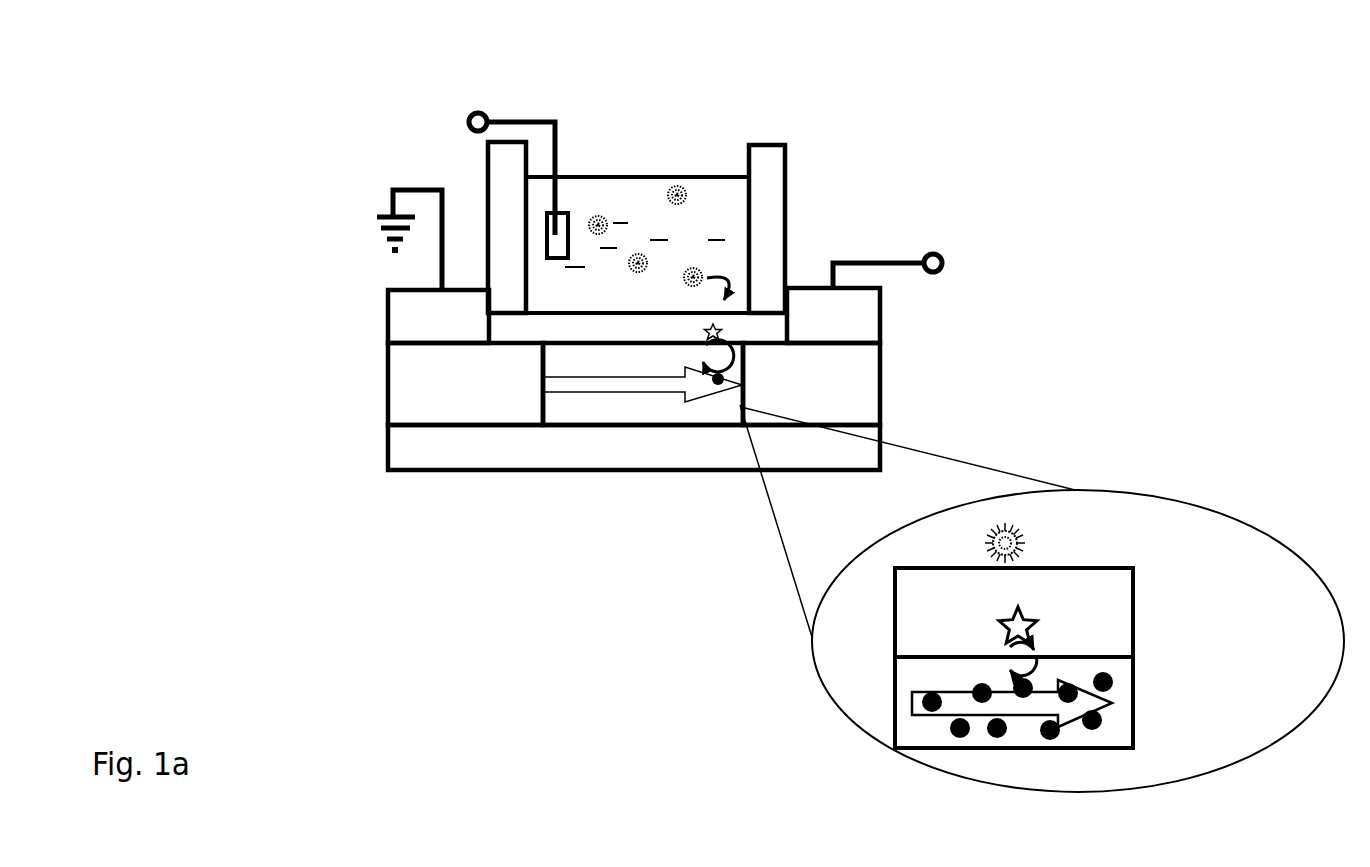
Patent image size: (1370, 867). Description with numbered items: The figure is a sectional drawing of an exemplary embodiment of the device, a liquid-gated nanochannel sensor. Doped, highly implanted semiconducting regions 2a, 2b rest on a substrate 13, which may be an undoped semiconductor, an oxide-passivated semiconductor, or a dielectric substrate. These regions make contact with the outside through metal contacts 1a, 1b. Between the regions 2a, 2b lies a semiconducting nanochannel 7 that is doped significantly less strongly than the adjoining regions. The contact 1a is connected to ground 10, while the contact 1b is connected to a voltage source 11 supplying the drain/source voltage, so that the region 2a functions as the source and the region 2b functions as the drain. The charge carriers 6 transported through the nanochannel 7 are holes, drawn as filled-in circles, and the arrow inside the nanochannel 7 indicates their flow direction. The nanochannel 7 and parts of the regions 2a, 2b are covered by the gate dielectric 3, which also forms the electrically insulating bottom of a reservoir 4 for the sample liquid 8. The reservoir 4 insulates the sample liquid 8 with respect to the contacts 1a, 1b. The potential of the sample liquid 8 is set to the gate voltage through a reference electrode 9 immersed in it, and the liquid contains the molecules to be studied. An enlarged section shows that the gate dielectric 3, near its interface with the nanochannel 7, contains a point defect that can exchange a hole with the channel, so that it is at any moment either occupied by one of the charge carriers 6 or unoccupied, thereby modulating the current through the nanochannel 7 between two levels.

The metal contact 1a is at (438, 316).
The metal contact 1b is at (833, 315).
The doped semiconducting region 2a is at (465, 384).
The doped semiconducting region 2b is at (811, 384).
The gate dielectric 3 is at (638, 328).
The reservoir 4 is at (636, 227).
The charge carriers 6 is at (1117, 682).
The semiconducting nanochannel 7 is at (643, 382).
The sample liquid 8 is at (637, 222).
The reference electrode 9 is at (567, 213).
The ground 10 is at (397, 163).
The voltage source 11 is at (943, 205).
The substrate 13 is at (634, 447).